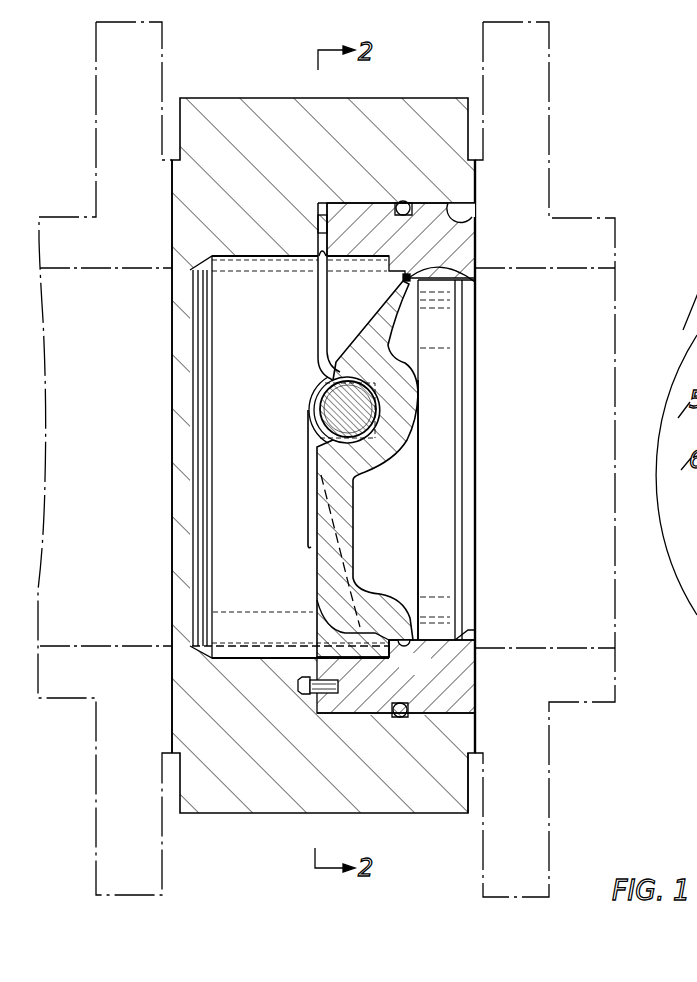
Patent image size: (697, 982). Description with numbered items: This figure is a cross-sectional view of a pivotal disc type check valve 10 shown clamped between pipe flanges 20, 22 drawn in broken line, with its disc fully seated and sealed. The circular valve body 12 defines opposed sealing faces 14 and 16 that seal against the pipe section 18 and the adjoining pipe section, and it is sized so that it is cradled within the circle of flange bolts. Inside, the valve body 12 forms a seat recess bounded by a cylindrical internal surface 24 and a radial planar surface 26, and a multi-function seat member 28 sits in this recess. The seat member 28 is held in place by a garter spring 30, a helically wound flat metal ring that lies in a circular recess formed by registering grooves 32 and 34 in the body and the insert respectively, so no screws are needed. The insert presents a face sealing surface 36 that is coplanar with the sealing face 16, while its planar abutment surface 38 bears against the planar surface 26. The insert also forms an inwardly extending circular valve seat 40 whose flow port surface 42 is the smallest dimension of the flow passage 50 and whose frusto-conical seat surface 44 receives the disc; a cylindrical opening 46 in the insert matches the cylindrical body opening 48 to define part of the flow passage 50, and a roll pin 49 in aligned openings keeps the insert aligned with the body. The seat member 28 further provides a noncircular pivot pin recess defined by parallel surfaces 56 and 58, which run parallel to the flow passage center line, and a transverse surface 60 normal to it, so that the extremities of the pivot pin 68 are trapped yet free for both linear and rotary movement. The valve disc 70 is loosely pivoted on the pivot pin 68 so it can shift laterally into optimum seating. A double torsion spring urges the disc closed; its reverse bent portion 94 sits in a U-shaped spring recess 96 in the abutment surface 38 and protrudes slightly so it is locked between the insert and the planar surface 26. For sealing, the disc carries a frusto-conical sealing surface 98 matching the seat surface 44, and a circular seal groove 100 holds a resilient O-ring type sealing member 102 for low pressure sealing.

The pivotal disc type check valve 10 is at (449, 72).
The valve body 12 is at (232, 115).
The sealing face 14 is at (172, 185).
The sealing face 16 is at (477, 177).
The pipe section 18 is at (87, 257).
The pipe flange 20 is at (95, 75).
The pipe flange 22 is at (547, 82).
The cylindrical internal surface 24 is at (478, 213).
The radial planar surface 26 is at (318, 258).
The seat member 28 is at (450, 250).
The garter spring 30 is at (412, 703).
The groove 32 is at (398, 708).
The groove 34 is at (432, 659).
The face sealing surface 36 is at (477, 706).
The planar abutment surface 38 is at (305, 676).
The circular valve seat 40 is at (435, 660).
The flow port surface 42 is at (440, 424).
The frusto-conical seat surface 44 is at (405, 540).
The cylindrical opening 46 is at (327, 305).
The cylindrical body opening 48 is at (236, 260).
The roll pin 49 is at (315, 690).
The flow passage 50 is at (262, 528).
The parallel surface 56 is at (320, 387).
The parallel surface 58 is at (317, 440).
The transverse surface 60 is at (377, 397).
The pivot pin 68 is at (333, 413).
The valve disc 70 is at (323, 557).
The reverse bent portion 94 is at (318, 222).
The spring recess 96 is at (332, 202).
The frusto-conical sealing surface 98 is at (412, 642).
The circular seal groove 100 is at (421, 309).
The resilient sealing member 102 is at (475, 281).